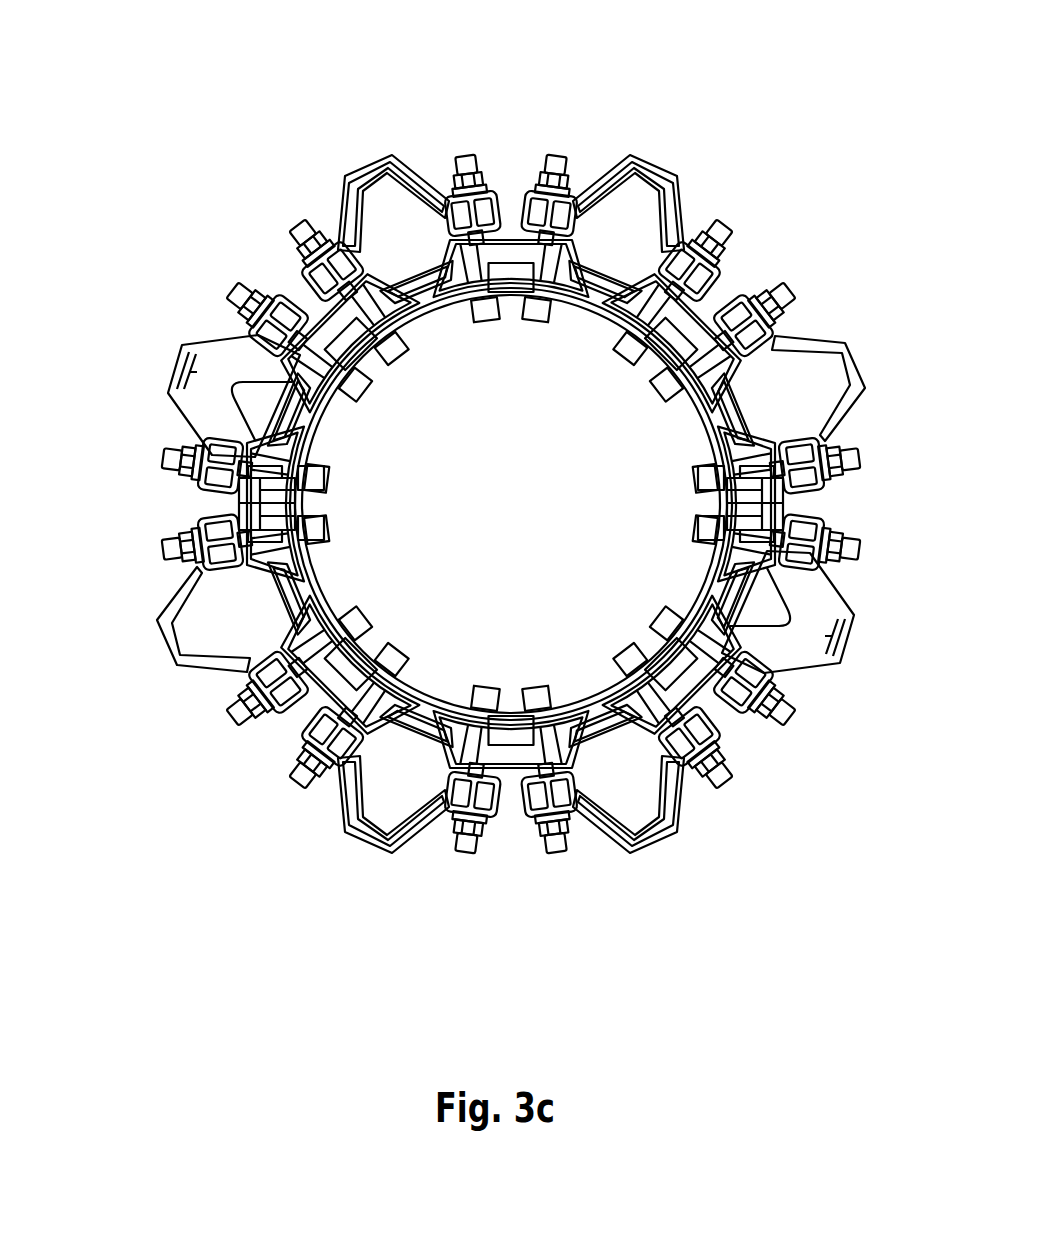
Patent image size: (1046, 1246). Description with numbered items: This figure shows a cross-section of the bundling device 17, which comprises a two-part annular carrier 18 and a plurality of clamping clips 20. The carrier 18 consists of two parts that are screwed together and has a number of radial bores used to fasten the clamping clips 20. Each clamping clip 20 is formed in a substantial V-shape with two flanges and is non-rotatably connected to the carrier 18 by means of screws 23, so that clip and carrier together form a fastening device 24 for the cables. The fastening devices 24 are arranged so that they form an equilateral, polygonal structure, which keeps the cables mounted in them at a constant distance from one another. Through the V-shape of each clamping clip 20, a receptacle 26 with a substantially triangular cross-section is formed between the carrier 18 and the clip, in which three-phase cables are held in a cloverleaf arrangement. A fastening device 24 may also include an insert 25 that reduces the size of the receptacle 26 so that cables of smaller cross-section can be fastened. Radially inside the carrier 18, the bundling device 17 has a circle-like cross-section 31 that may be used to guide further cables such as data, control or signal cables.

The bundling device 17 is at (318, 126).
The carrier 18 is at (592, 298).
The clamping clip 20 is at (681, 170).
The screw 23 is at (746, 548).
The fastening device 24 is at (666, 862).
The insert 25 is at (216, 360).
The receptacle 26 is at (381, 780).
The radially inner circle-like cross-section 31 is at (505, 609).